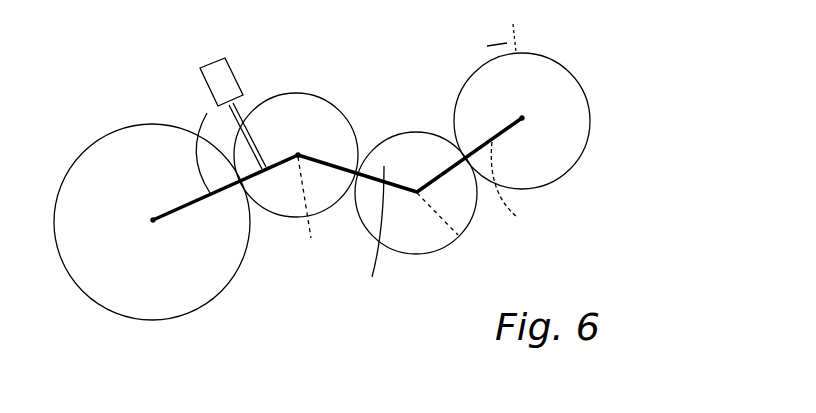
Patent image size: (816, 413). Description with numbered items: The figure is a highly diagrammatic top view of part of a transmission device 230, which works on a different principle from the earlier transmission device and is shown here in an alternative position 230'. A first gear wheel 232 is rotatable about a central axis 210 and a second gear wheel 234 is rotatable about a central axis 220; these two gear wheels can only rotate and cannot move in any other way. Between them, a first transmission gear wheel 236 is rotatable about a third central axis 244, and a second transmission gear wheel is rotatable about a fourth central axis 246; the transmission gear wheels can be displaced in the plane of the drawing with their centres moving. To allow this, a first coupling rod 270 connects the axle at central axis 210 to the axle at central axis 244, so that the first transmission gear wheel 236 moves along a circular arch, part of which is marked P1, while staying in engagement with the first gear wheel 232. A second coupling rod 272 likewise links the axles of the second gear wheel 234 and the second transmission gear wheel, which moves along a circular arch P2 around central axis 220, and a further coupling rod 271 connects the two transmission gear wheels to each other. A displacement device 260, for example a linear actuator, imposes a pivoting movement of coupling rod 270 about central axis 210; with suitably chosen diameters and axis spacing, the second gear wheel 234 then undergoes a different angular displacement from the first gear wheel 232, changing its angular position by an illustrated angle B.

The transmission device 230 is at (457, 169).
The arm assembly in second position 230' is at (417, 87).
The first gear wheel 232 is at (162, 189).
The first transmission gear wheel 236 is at (316, 134).
The second gear wheel 234 is at (563, 82).
The central axis 210 is at (154, 222).
The central axis 220 is at (524, 121).
The third central axis 244 is at (305, 151).
The fourth central axis 246 is at (414, 188).
The displacement device 260 is at (231, 77).
The first coupling rod 270 is at (207, 113).
The coupling rod 271 is at (378, 241).
The second coupling rod 272 is at (530, 188).
The circular arch P1 is at (311, 240).
The circular arch P2 is at (462, 238).
The angle β B is at (494, 52).